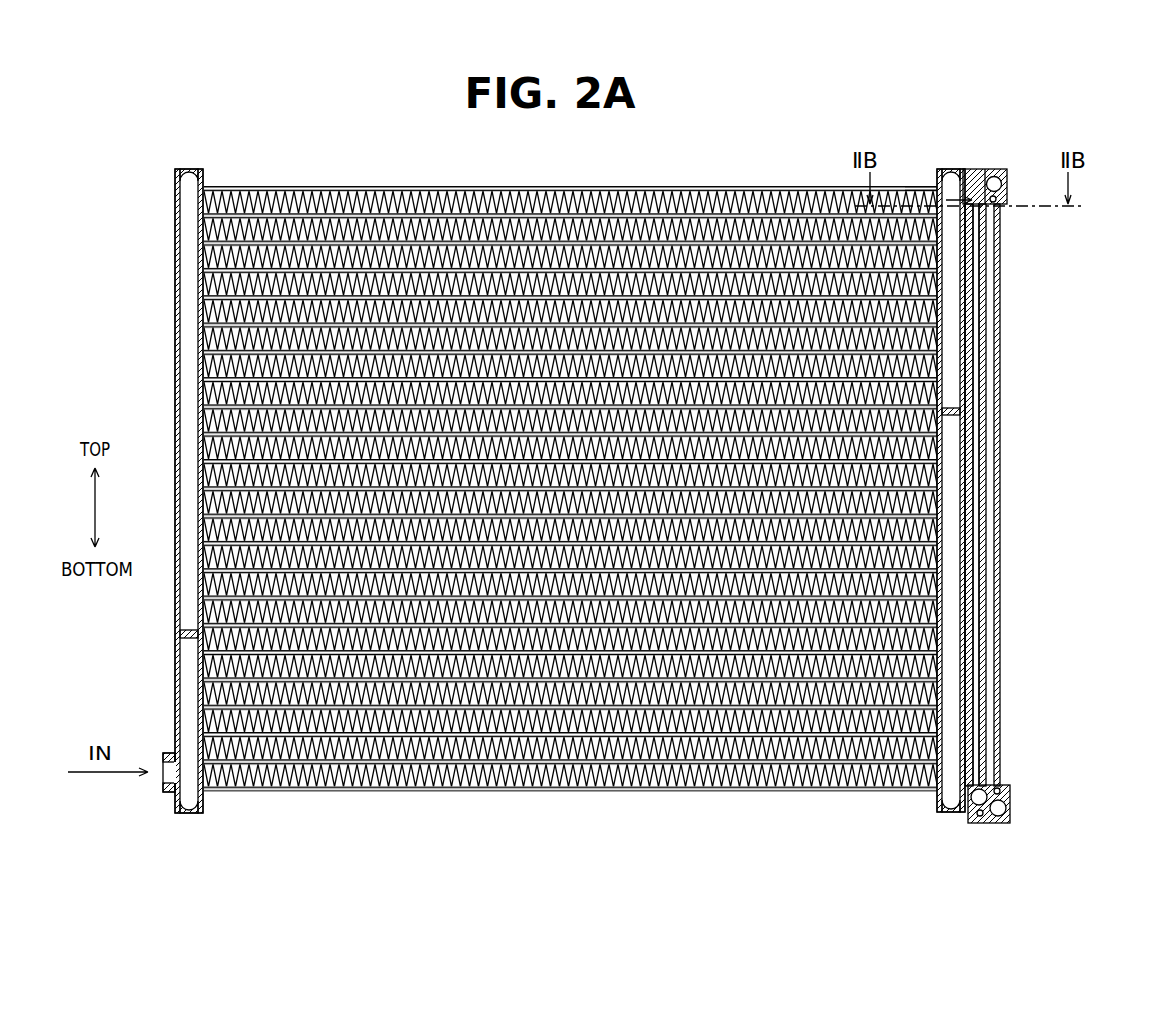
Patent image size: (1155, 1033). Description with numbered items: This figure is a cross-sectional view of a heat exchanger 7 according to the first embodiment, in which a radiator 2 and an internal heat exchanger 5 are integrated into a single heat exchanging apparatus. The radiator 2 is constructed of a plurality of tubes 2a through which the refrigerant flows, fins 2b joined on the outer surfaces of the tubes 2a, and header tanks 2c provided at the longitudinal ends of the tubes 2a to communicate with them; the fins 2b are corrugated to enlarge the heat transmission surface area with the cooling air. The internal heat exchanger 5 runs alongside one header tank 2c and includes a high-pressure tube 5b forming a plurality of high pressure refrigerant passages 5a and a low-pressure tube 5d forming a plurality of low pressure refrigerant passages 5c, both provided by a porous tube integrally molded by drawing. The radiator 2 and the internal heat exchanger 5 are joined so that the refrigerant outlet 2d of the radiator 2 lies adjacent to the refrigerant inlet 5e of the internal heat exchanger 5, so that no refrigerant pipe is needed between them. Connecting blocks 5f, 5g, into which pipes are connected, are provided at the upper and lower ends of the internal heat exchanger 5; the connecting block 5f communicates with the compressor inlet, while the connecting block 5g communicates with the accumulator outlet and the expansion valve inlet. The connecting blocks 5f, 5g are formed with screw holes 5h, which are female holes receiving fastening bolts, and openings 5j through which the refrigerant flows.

The radiator 2 is at (590, 488).
The tubes 2a is at (720, 732).
The fins 2b is at (484, 776).
The header tanks 2c is at (175, 245).
The refrigerant outlet 2d is at (920, 196).
The heat exchanger 7 is at (570, 488).
The internal heat exchanger 5 is at (1006, 497).
The high pressure refrigerant passages 5a is at (980, 626).
The high-pressure tube 5b is at (1040, 495).
The low pressure refrigerant passages 5c is at (990, 687).
The low-pressure tube 5d is at (1037, 495).
The refrigerant inlet 5e is at (966, 180).
The connecting block 5f is at (1003, 176).
The connecting block 5g is at (1009, 803).
The screw holes 5h is at (1004, 199).
The openings 5j is at (993, 178).